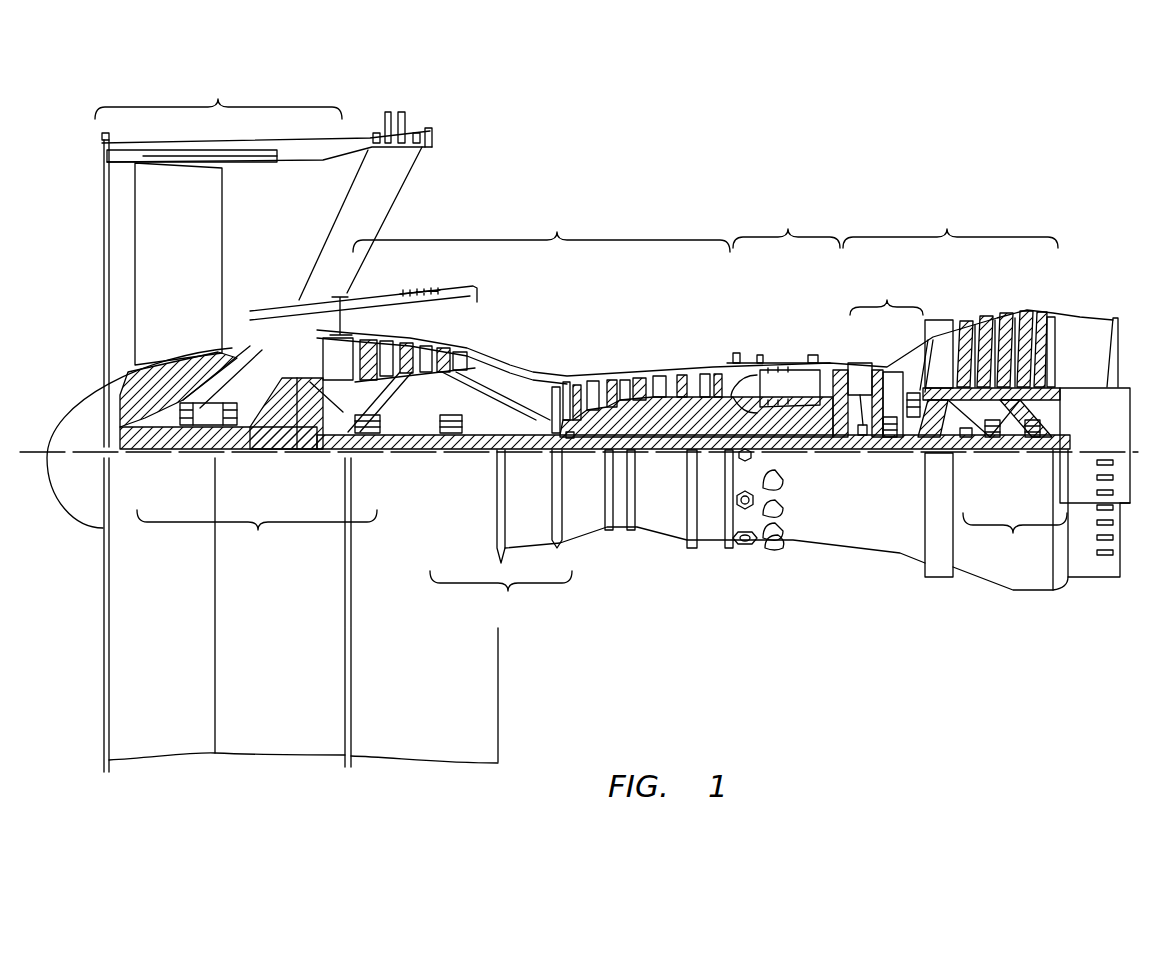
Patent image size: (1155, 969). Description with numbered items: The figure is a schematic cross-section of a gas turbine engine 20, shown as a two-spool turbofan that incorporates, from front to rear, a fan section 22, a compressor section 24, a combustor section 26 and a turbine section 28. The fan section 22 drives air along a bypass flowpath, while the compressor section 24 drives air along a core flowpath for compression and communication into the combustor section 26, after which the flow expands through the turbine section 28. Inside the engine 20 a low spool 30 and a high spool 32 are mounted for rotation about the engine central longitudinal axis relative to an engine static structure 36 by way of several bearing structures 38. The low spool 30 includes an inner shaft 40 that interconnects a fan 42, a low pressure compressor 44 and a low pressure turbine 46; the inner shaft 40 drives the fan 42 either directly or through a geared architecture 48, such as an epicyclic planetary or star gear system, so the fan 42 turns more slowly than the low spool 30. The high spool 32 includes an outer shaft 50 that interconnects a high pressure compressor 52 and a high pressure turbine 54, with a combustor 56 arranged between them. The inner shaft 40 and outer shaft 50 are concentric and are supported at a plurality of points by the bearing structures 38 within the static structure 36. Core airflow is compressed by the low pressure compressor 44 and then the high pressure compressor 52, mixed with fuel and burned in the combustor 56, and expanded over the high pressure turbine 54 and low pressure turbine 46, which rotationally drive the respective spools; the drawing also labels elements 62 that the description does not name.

The gas turbine engine 20 is at (891, 191).
The fan section 22 is at (218, 94).
The compressor section 24 is at (541, 227).
The combustor section 26 is at (786, 225).
The turbine section 28 is at (950, 225).
The low spool 30 is at (665, 452).
The high spool 32 is at (700, 377).
The engine static structure 36 is at (712, 545).
The bearing structures 38 is at (602, 448).
The inner shaft 40 is at (518, 449).
The fan 42 is at (155, 280).
The low pressure compressor 44 is at (425, 343).
The low pressure turbine 46 is at (990, 322).
The geared architecture 48 is at (300, 440).
The outer shaft 50 is at (772, 432).
The high pressure compressor 52 is at (648, 415).
The high pressure turbine 54 is at (855, 363).
The combustor 56 is at (795, 385).
The bearing 62 is at (570, 438).